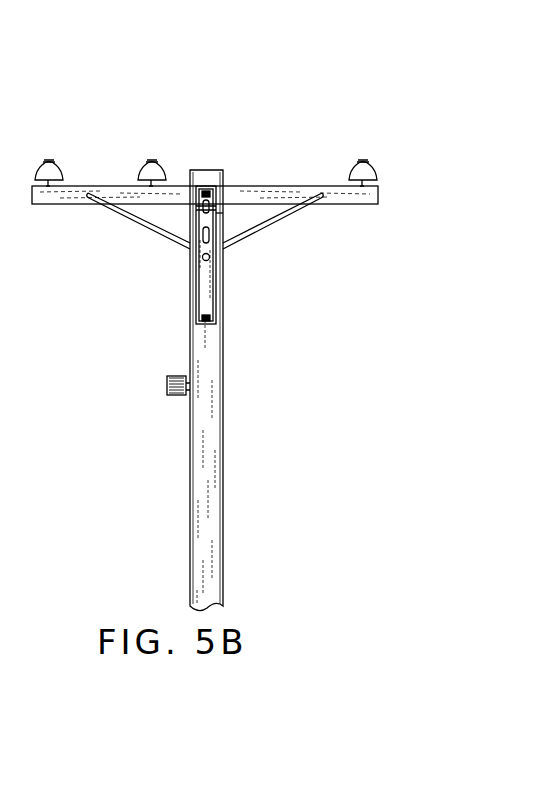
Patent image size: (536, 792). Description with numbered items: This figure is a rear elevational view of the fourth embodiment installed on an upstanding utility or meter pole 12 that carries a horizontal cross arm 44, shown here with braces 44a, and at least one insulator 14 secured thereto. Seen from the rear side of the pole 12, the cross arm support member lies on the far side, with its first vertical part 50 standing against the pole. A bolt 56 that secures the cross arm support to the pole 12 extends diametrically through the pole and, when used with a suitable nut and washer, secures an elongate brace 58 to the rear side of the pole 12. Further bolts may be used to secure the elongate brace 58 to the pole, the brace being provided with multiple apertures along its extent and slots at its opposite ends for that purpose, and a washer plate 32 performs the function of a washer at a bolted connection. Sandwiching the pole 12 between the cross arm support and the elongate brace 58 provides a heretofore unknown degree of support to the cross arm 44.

The pole 12 is at (223, 373).
The insulator 14 is at (147, 160).
The washer plate 32 is at (210, 205).
The cross arm 44 is at (255, 186).
The braces 44a is at (160, 235).
The first vertical part 50 is at (196, 208).
The bolt 56 is at (223, 213).
The elongate brace 58 is at (205, 285).